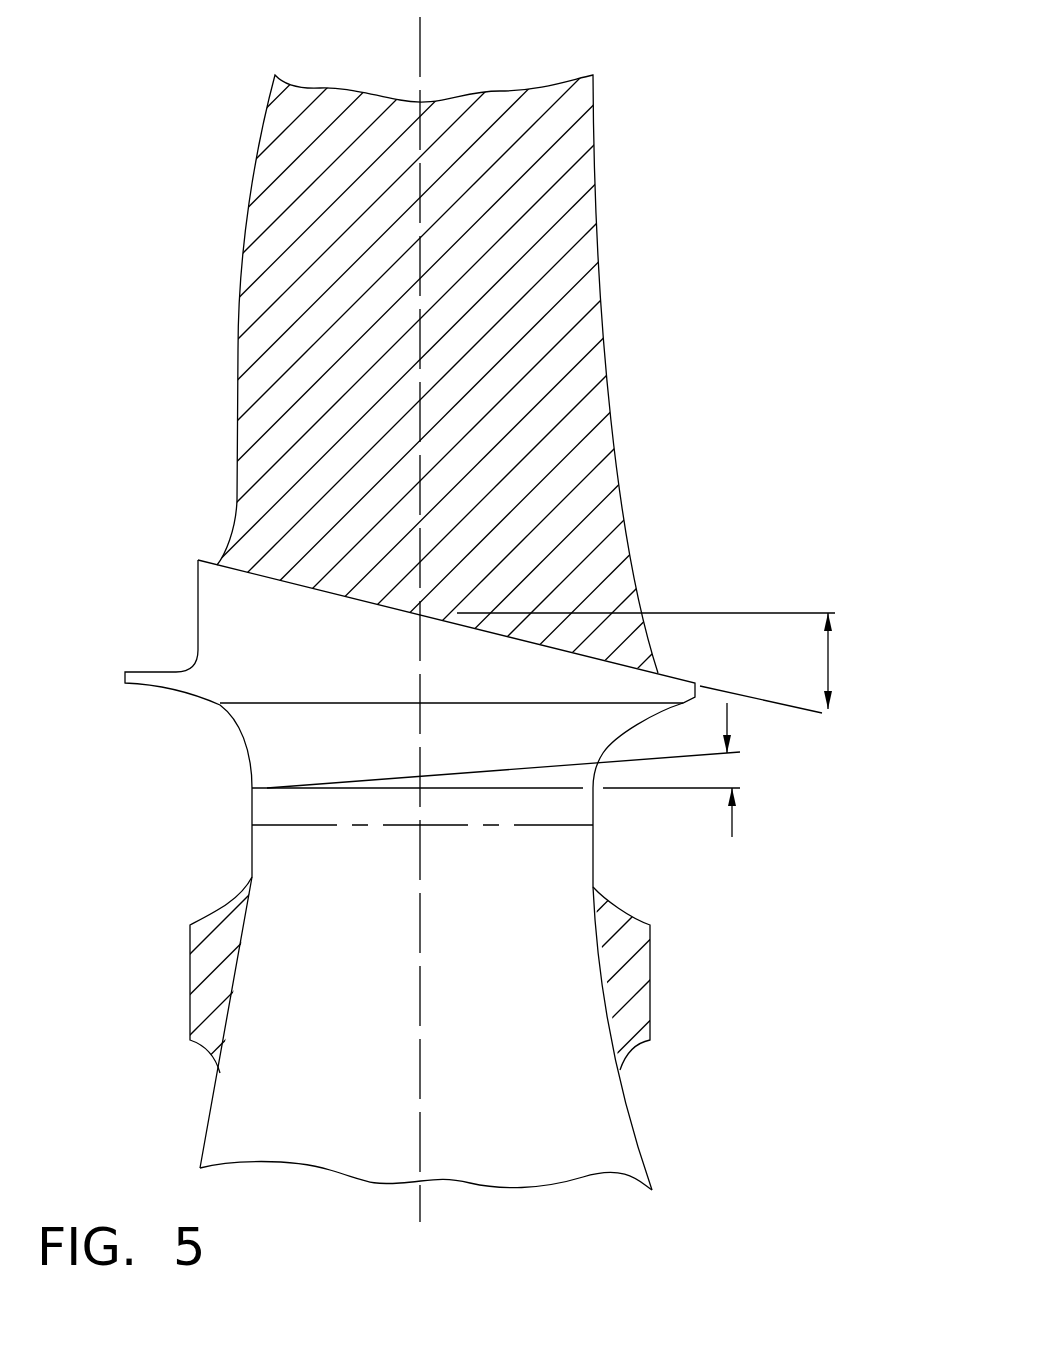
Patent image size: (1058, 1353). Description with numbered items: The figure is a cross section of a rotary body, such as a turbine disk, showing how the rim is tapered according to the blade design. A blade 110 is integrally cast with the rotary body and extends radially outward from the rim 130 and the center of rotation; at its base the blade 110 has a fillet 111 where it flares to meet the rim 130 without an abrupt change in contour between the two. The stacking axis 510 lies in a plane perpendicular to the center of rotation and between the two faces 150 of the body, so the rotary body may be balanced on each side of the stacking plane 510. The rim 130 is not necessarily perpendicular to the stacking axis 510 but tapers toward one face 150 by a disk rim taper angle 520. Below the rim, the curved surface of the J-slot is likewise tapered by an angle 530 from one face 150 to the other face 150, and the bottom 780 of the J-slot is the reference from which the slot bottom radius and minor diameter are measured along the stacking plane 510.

The blade 110 is at (595, 230).
The fillet 111 is at (651, 640).
The rim 130 is at (686, 676).
The face 150 is at (208, 1120).
The stacking axis 510 is at (420, 50).
The disk rim taper angle 520 is at (828, 658).
The taper angle of J-slot curved surface 530 is at (732, 825).
The bottom of the J-slot 780 is at (363, 790).